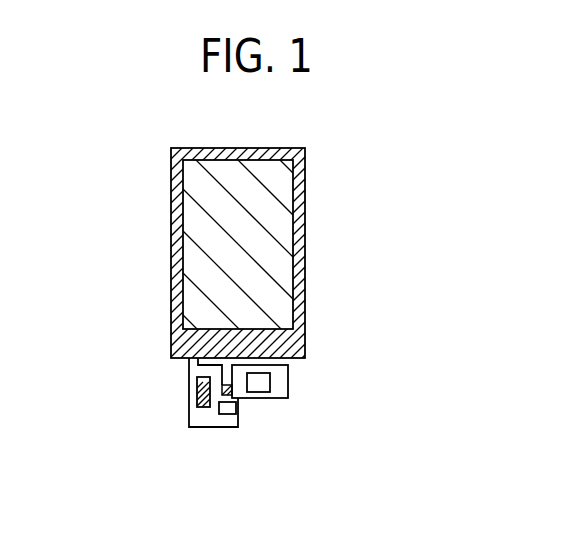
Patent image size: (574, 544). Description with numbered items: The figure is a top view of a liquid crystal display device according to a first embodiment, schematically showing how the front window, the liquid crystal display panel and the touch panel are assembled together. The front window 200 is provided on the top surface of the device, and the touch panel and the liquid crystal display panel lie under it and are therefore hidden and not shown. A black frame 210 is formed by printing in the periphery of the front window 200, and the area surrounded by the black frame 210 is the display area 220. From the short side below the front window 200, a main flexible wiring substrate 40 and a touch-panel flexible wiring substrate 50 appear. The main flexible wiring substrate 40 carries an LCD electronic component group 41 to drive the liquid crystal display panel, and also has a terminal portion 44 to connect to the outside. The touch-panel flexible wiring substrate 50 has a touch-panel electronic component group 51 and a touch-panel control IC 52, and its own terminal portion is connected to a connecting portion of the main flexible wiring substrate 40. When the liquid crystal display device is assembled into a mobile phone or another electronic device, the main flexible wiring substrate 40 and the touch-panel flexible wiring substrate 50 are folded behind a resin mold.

The front window 200 is at (256, 253).
The display area 220 is at (300, 198).
The black frame 210 is at (297, 300).
The main flexible wiring substrate 40 is at (253, 421).
The LCD electronic component group 41 is at (200, 389).
The terminal portion 44 is at (198, 422).
The touch-panel control IC 52 is at (226, 414).
The touch-panel flexible wiring substrate 50 is at (309, 394).
The touch-panel electronic component group 51 is at (265, 387).